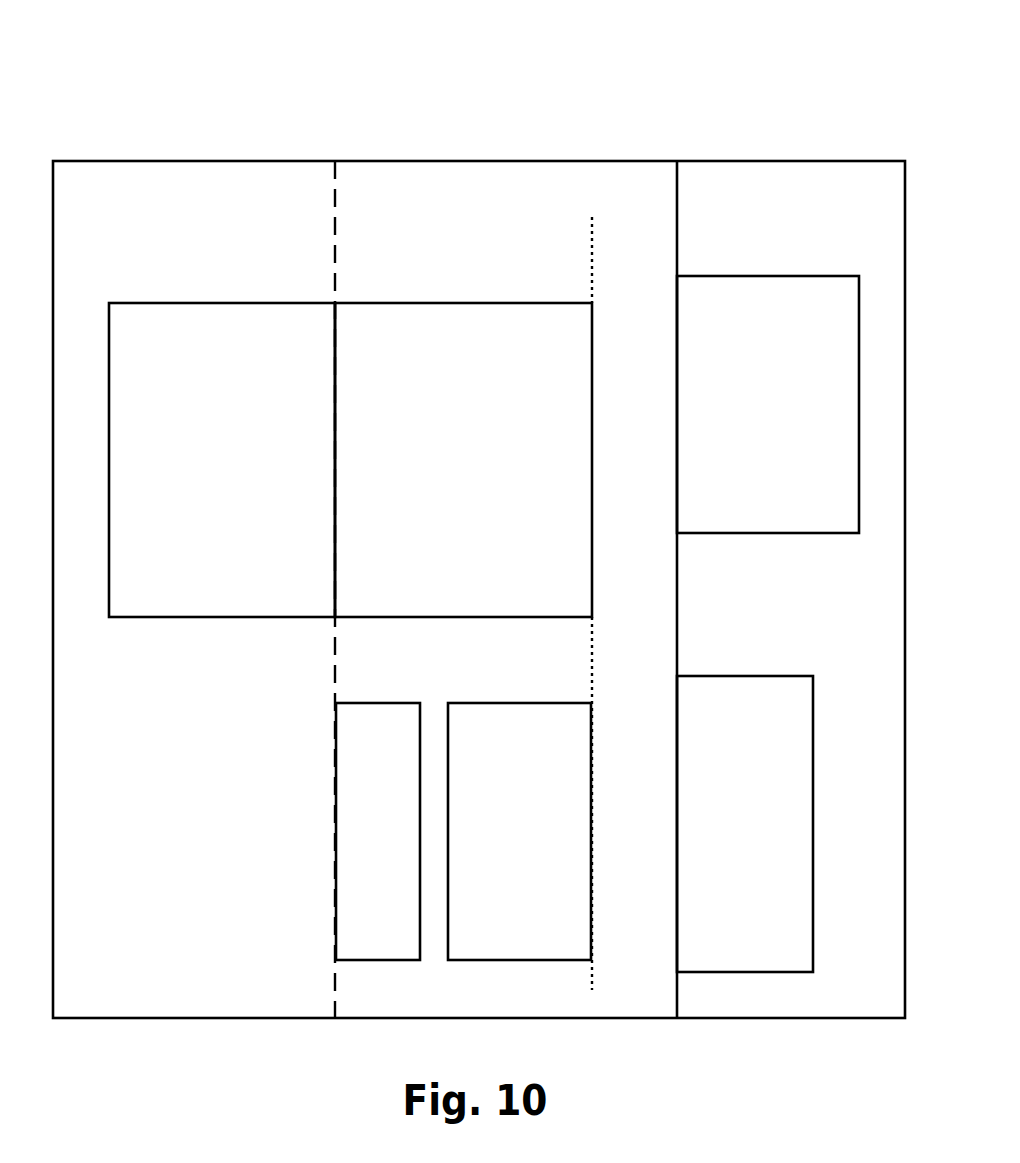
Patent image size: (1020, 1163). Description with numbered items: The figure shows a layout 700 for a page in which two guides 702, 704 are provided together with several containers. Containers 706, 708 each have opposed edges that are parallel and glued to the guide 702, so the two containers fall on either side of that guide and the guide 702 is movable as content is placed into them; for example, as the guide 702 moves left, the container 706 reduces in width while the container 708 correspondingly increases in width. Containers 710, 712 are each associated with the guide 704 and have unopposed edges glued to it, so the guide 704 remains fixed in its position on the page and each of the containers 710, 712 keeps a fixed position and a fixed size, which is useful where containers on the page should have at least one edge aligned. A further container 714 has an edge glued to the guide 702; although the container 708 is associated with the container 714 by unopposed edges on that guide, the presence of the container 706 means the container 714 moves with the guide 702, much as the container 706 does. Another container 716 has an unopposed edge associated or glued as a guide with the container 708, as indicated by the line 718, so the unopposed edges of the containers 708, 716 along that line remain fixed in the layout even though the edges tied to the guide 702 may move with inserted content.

The layout 700 is at (508, 159).
The guide 702 is at (338, 247).
The guide 704 is at (679, 218).
The container 706 is at (222, 460).
The container 708 is at (463, 460).
The container 710 is at (768, 404).
The container 712 is at (745, 824).
The container 714 is at (378, 831).
The container 716 is at (519, 831).
The line 718 is at (595, 248).